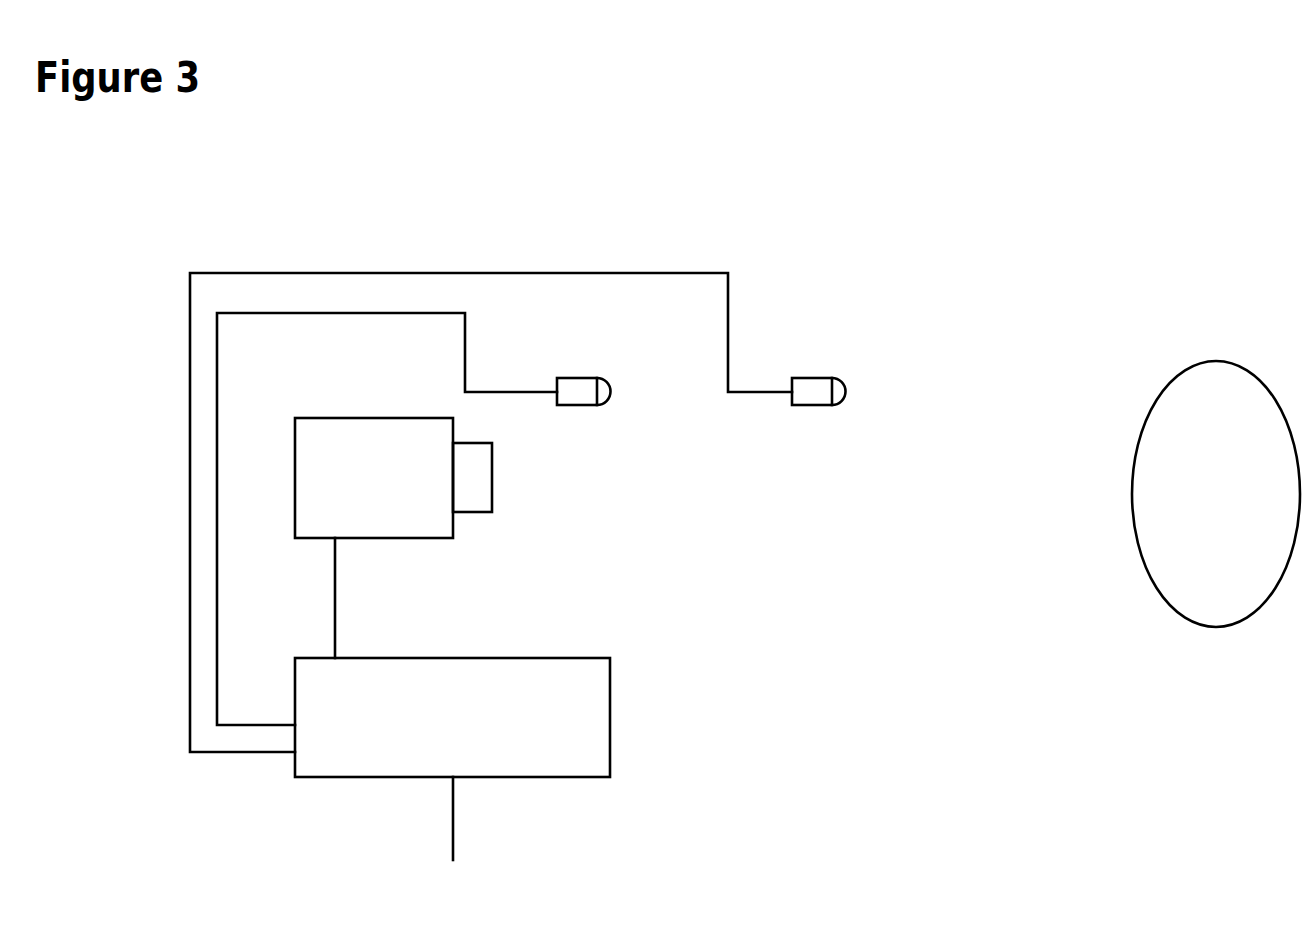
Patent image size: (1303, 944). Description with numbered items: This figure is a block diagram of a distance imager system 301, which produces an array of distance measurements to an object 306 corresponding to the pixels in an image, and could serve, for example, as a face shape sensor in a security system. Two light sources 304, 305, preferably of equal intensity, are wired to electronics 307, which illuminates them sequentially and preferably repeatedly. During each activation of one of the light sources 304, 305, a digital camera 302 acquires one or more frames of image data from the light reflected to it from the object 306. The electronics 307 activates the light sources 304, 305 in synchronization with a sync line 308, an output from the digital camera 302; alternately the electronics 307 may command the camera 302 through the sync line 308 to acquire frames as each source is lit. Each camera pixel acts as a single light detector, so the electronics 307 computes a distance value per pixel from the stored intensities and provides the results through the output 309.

The distance imager system 301 is at (962, 287).
The digital camera 302 is at (442, 540).
The light source 304 is at (623, 342).
The light source 305 is at (822, 375).
The object 306 is at (1200, 362).
The electronics 307 is at (610, 697).
The sync line 308 is at (335, 605).
The output 309 is at (463, 843).